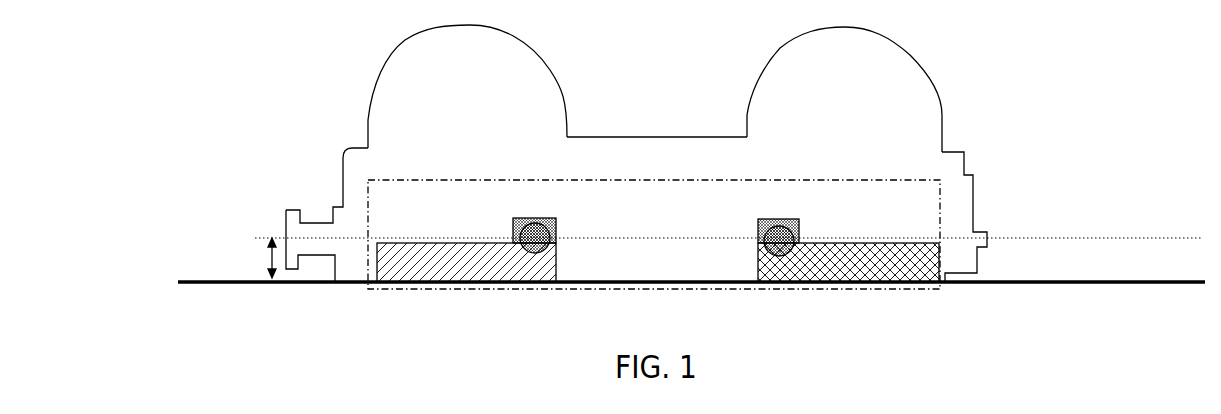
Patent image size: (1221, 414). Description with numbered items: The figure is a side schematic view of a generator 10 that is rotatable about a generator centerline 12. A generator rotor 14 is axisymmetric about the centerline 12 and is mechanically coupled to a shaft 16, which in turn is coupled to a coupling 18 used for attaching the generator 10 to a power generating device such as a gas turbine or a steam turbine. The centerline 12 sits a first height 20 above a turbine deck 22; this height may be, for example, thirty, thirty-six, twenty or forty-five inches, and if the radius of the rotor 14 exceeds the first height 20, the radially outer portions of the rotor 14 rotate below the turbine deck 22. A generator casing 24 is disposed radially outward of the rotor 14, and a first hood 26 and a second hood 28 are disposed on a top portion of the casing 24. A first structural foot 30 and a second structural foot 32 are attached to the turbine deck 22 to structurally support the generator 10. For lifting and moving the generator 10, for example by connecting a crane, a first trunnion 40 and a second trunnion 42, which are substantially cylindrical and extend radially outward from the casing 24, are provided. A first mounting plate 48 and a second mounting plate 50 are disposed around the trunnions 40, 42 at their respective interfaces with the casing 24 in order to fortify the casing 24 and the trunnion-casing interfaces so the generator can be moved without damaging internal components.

The generator 10 is at (246, 90).
The generator centerline 12 is at (1138, 237).
The generator rotor 14 is at (457, 179).
The shaft 16 is at (323, 222).
The coupling 18 is at (286, 228).
The first height 20 is at (268, 259).
The turbine deck 22 is at (227, 281).
The generator casing 24 is at (623, 153).
The first hood 26 is at (518, 80).
The second hood 28 is at (900, 72).
The first structural foot 30 is at (408, 278).
The second structural foot 32 is at (888, 277).
The first trunnion 40 is at (543, 240).
The second trunnion 42 is at (797, 235).
The first mounting plate 48 is at (519, 218).
The second mounting plate 50 is at (758, 222).